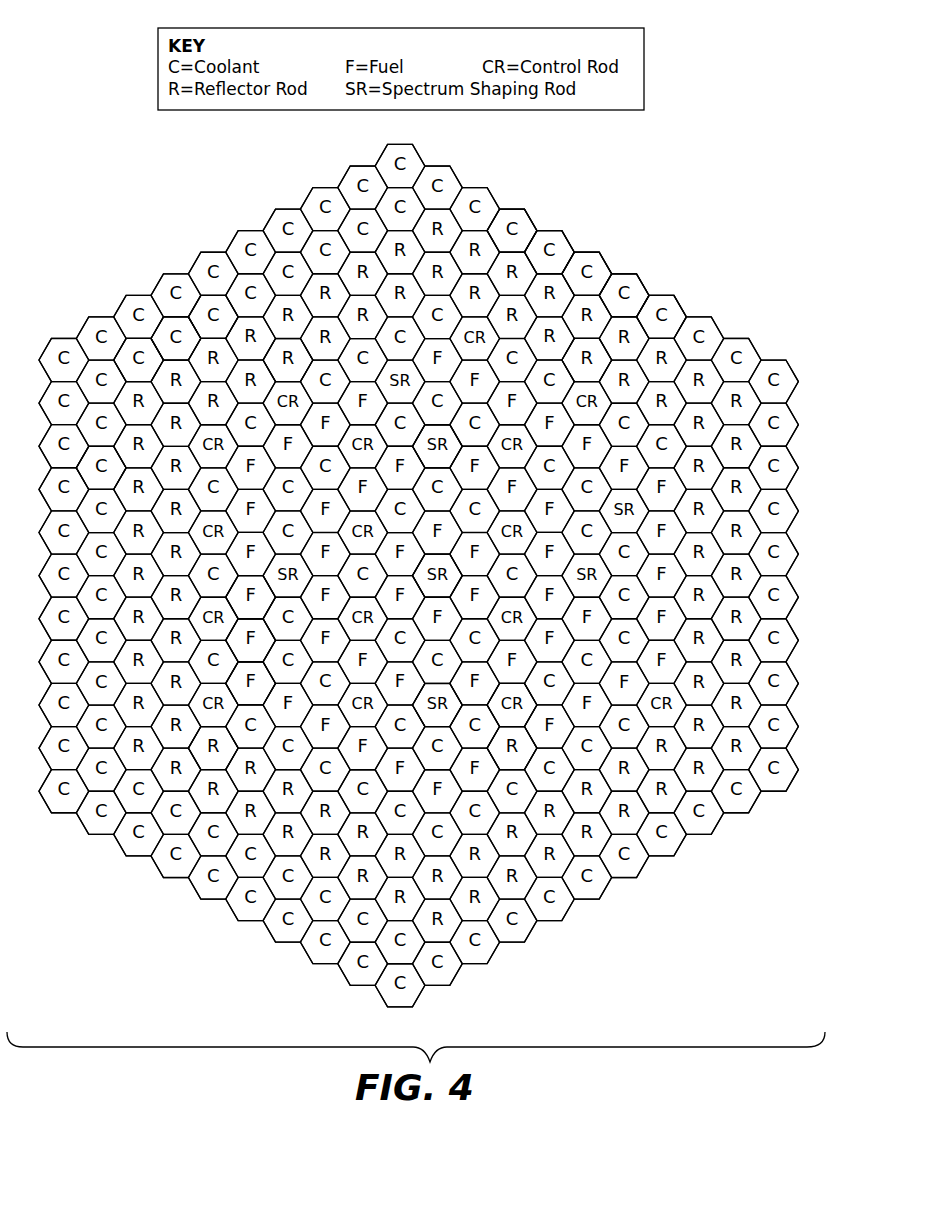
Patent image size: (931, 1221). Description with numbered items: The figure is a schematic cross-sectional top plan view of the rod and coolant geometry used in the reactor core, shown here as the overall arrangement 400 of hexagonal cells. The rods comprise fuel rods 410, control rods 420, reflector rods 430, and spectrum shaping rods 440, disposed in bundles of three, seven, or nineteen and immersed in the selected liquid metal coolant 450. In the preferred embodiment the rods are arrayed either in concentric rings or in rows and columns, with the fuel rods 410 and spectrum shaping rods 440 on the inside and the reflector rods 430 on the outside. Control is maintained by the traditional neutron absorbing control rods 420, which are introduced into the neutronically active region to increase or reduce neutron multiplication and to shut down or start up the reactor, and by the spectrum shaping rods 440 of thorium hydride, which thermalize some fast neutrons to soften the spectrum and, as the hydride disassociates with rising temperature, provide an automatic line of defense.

The reactor core layout 400 is at (666, 182).
The fuel rods 410 is at (247, 681).
The control rods 420 is at (517, 722).
The reflector rods 430 is at (210, 337).
The spectrum shaping rods 440 is at (438, 717).
The liquid metal coolant 450 is at (655, 295).